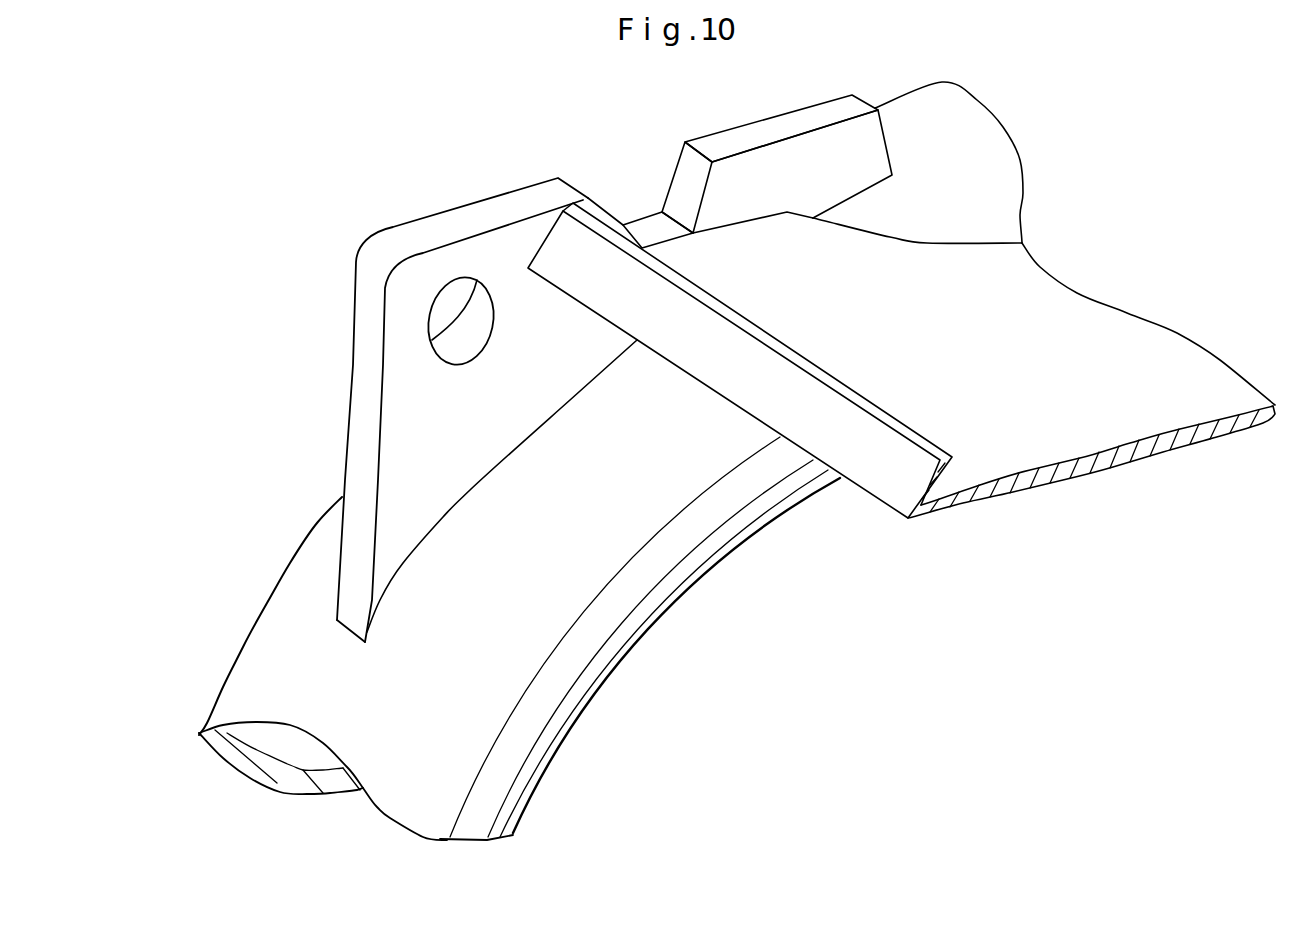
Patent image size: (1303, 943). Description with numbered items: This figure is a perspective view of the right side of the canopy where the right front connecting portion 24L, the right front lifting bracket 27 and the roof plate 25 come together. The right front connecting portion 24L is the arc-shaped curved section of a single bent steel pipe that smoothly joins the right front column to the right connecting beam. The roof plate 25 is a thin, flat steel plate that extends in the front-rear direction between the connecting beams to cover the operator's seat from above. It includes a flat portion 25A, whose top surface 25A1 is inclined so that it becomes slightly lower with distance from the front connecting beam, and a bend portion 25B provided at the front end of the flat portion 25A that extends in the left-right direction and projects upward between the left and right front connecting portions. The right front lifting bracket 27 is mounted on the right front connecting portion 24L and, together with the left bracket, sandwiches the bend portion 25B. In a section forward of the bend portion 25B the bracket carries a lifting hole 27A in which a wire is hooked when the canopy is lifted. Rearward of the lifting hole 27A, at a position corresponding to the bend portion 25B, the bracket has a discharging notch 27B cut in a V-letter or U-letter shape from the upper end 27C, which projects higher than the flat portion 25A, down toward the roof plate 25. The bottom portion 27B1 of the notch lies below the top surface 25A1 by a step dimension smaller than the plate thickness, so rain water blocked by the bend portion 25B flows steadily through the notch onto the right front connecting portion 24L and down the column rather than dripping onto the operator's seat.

The right front connecting portion 24L is at (597, 667).
The roof plate 25 is at (1177, 340).
The flat portion 25A is at (1052, 477).
The top surface 25A1 is at (1143, 420).
The bend portion 25B is at (870, 475).
The right front lifting bracket 27 is at (420, 227).
The lifting hole 27A is at (444, 297).
The discharging notch 27B is at (683, 170).
The bottom portion 27B1 is at (640, 227).
The upper end 27C is at (748, 132).